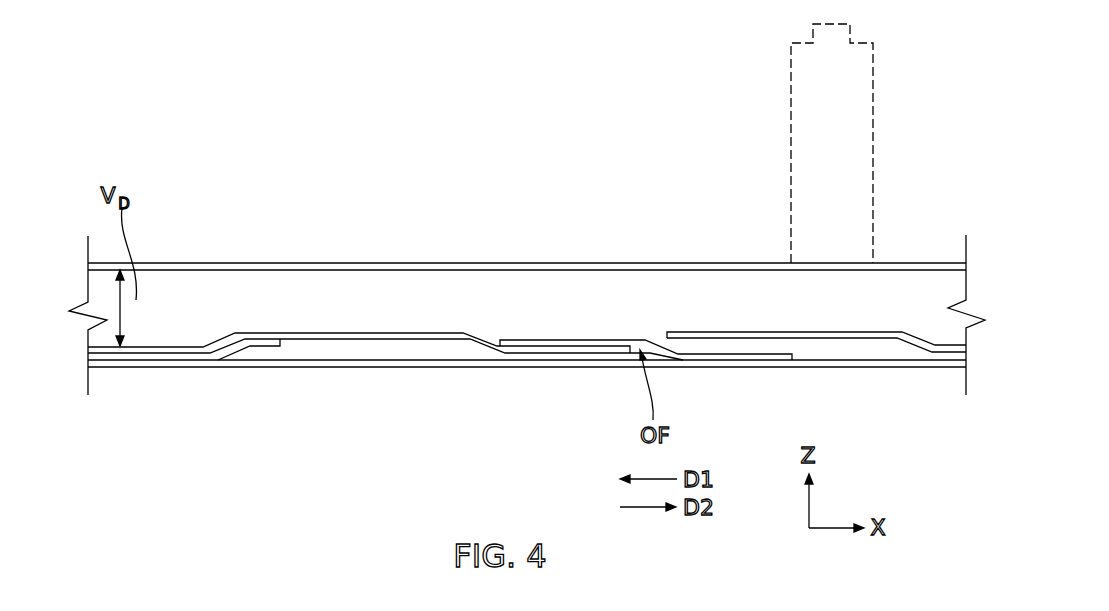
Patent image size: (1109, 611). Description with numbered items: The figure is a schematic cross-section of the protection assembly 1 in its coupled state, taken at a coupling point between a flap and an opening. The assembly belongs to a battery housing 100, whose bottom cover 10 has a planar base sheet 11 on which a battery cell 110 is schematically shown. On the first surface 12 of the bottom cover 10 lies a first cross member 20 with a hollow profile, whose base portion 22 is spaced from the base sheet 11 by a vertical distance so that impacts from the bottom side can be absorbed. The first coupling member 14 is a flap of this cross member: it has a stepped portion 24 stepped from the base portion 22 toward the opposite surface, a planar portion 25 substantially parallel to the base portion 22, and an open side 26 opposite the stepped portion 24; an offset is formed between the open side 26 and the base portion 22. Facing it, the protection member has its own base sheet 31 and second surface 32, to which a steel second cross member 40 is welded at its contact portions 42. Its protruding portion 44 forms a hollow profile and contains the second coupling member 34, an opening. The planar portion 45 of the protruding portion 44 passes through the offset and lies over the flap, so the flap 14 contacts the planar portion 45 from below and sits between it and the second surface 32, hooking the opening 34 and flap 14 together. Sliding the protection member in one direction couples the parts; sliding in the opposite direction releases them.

The protection assembly 1 is at (449, 183).
The battery housing 100 is at (608, 90).
The battery cell 110 is at (876, 144).
The bottom cover 10 is at (616, 261).
The base sheet 11 is at (678, 262).
The first surface 12 is at (358, 274).
The first coupling member 14 is at (524, 358).
The first cross member 20 is at (235, 330).
The base portion 22 is at (405, 330).
The stepped portion 24 is at (478, 348).
The planar portion 25 is at (553, 356).
The open side 26 is at (600, 356).
The base sheet 31 is at (372, 369).
The second surface 32 is at (330, 355).
The second coupling member 34 is at (278, 344).
The second cross member 40 is at (683, 359).
The contact portion 42 is at (173, 359).
The protruding portion 44 is at (250, 351).
The planar portion 45 is at (570, 338).